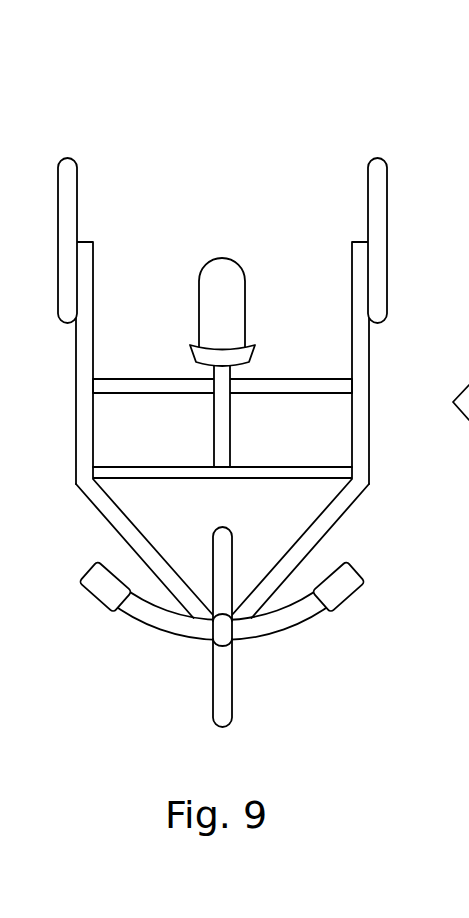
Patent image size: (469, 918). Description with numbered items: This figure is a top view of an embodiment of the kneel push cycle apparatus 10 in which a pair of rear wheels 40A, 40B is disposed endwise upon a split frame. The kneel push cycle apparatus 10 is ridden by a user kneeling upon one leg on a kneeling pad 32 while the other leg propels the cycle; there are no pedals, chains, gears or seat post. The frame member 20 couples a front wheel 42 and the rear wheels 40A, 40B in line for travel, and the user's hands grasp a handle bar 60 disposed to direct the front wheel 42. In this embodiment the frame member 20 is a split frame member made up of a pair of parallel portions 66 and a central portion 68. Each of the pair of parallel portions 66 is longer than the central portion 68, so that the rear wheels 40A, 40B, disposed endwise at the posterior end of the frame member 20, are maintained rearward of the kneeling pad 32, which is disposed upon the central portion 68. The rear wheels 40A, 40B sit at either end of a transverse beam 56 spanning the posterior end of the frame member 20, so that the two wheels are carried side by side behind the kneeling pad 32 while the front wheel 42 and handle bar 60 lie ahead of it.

The kneel push cycle apparatus 10 is at (355, 104).
The frame member 20 is at (384, 522).
The kneeling pad 32 is at (235, 311).
The rear wheel 40A is at (78, 178).
The rear wheel 40B is at (368, 179).
The front wheel 42 is at (220, 709).
The articulated transverse beam 56 is at (293, 395).
The handle bar 60 is at (292, 622).
The parallel portions 66 is at (355, 349).
The central portion 68 is at (215, 417).